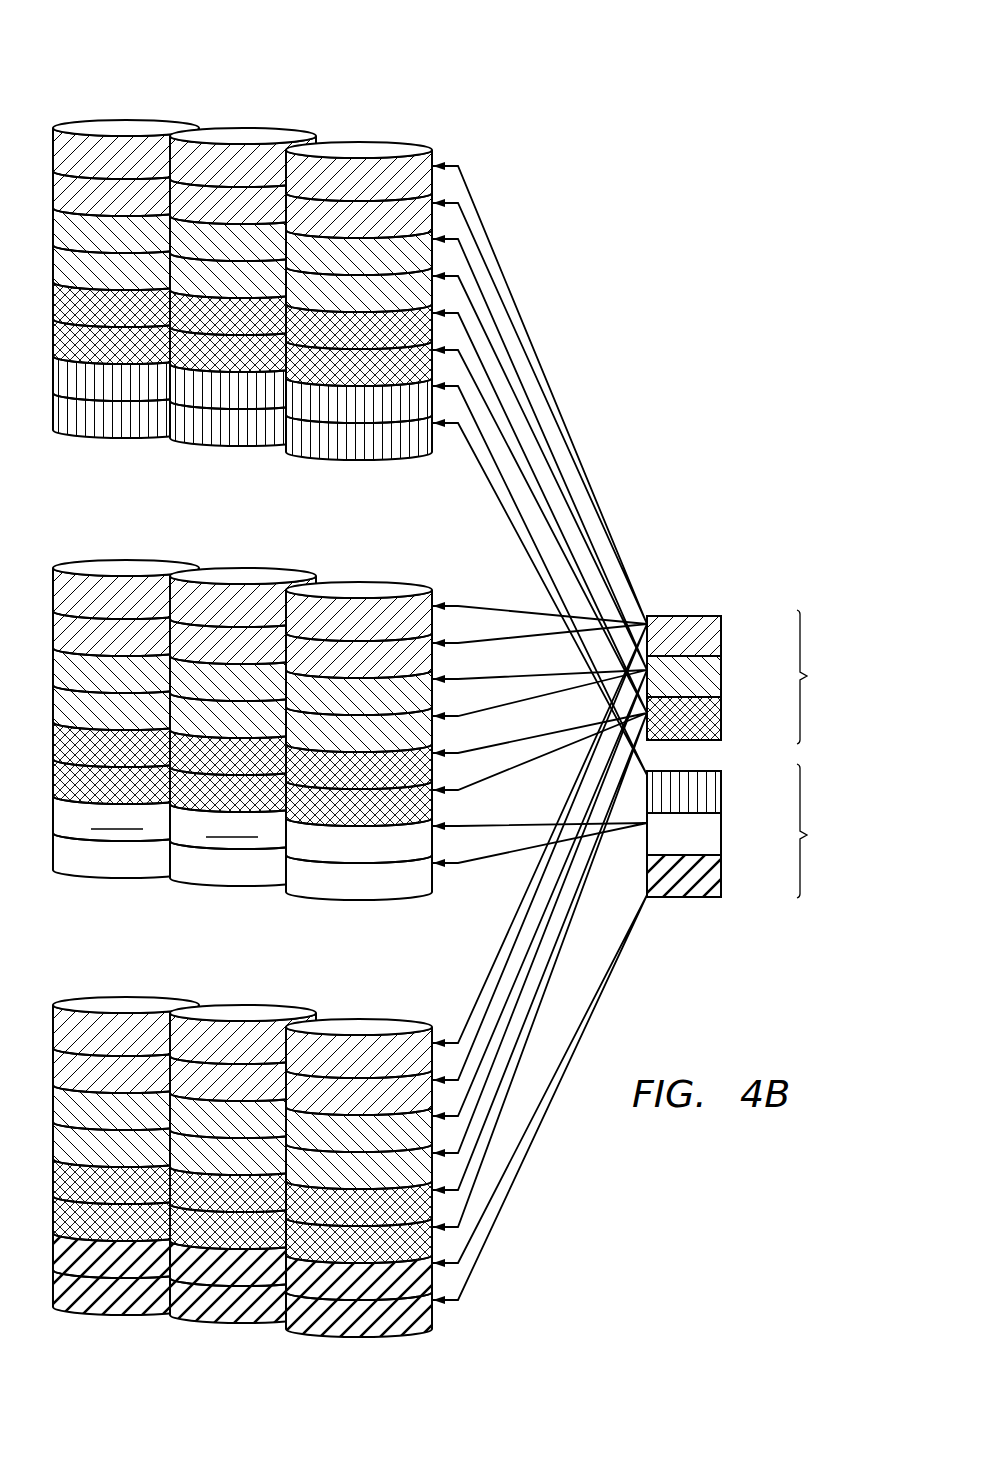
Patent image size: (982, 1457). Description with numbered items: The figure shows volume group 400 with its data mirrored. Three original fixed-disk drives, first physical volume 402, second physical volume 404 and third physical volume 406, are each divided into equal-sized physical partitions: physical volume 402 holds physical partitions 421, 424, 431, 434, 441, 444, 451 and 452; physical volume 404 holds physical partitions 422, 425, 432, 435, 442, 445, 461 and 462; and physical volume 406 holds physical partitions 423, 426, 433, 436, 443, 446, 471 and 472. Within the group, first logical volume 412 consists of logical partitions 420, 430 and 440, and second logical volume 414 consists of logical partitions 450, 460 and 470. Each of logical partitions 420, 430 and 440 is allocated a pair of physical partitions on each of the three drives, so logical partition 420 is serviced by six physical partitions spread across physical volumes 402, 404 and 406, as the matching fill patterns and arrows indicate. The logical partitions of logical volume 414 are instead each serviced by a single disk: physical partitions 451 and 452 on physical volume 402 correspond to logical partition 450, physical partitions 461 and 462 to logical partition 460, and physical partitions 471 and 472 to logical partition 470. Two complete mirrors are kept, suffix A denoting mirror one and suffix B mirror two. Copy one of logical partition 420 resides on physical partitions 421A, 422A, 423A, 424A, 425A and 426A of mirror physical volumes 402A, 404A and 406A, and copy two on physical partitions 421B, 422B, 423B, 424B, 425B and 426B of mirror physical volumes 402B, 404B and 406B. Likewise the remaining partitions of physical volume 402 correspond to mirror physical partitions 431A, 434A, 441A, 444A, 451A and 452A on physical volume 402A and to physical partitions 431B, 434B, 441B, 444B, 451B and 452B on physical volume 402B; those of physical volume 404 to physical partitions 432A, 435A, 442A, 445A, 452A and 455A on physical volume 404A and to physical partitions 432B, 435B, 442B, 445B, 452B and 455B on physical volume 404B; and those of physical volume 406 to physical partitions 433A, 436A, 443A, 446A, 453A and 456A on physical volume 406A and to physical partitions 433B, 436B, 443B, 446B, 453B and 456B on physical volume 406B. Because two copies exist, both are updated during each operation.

The volume group 400 is at (484, 671).
The first physical volume 402 is at (359, 244).
The first mirror physical volume 402A is at (243, 232).
The second mirror physical volume 402B is at (126, 221).
The second physical volume 404 is at (359, 684).
The first mirror physical volume 404A is at (243, 672).
The second mirror physical volume 404B is at (126, 661).
The third physical volume 406 is at (359, 1121).
The first mirror physical volume 406A is at (243, 1109).
The second mirror physical volume 406B is at (126, 1098).
The first logical volume 412 is at (704, 618).
The second logical volume 414 is at (704, 891).
The logical partition 420 is at (721, 634).
The logical partition 430 is at (721, 675).
The logical partition 440 is at (721, 715).
The logical partition 450 is at (721, 795).
The logical partition 460 is at (721, 837).
The logical partition 470 is at (721, 878).
The physical partition 421 is at (378, 195).
The physical partition 424 is at (378, 229).
The physical partition 431 is at (378, 265).
The physical partition 434 is at (378, 301).
The physical partition 441 is at (378, 338).
The physical partition 444 is at (378, 374).
The physical partition 451 is at (378, 411).
The physical partition 452 is at (378, 448).
The mirror physical partition 421A is at (258, 181).
The mirror physical partition 424A is at (258, 215).
The physical partition copy 431A is at (258, 251).
The physical partition copy 434A is at (258, 287).
The physical partition copy 441A is at (258, 324).
The physical partition copy 444A is at (258, 360).
The physical partition copy 451A is at (258, 397).
The physical partition copy 452A is at (258, 434).
The mirror physical partition 421B is at (143, 173).
The mirror physical partition 424B is at (143, 207).
The physical partition copy 431B is at (143, 243).
The physical partition copy 434B is at (143, 279).
The physical partition copy 441B is at (143, 316).
The physical partition copy 444B is at (143, 352).
The physical partition copy 451B is at (143, 389).
The physical partition copy 452B is at (143, 426).
The physical partition 422 is at (359, 615).
The physical partition 425 is at (359, 655).
The physical partition 432 is at (359, 692).
The physical partition 435 is at (359, 729).
The physical partition 442 is at (359, 766).
The physical partition 445 is at (359, 803).
The physical partition 461 is at (359, 840).
The physical partition 462 is at (359, 877).
The mirror physical partition 422A is at (243, 601).
The mirror physical partition 425A is at (243, 641).
The physical partition copy 432A is at (243, 678).
The physical partition copy 435A is at (243, 715).
The physical partition copy 442A is at (243, 752).
The physical partition copy 445A is at (243, 789).
The physical partition copy 455A is at (243, 863).
The mirror physical partition 422B is at (126, 593).
The mirror physical partition 425B is at (126, 633).
The physical partition copy 432B is at (126, 670).
The physical partition copy 435B is at (126, 707).
The physical partition copy 442B is at (126, 744).
The physical partition copy 445B is at (126, 781).
The physical partition copy 455B is at (126, 855).
The physical partition 423 is at (359, 1052).
The physical partition 426 is at (359, 1092).
The physical partition 433 is at (359, 1129).
The physical partition 436 is at (359, 1166).
The physical partition 443 is at (359, 1203).
The physical partition 446 is at (359, 1240).
The physical partition 471 is at (359, 1277).
The physical partition 472 is at (359, 1314).
The mirror physical partition 423A is at (243, 1038).
The mirror physical partition 426A is at (243, 1078).
The physical partition copy 433A is at (243, 1115).
The physical partition copy 436A is at (243, 1152).
The physical partition copy 443A is at (243, 1189).
The physical partition copy 446A is at (243, 1226).
The physical partition copy 453A is at (243, 1263).
The physical partition copy 456A is at (243, 1300).
The mirror physical partition 423B is at (126, 1030).
The mirror physical partition 426B is at (126, 1070).
The physical partition copy 433B is at (126, 1107).
The physical partition copy 436B is at (126, 1144).
The physical partition copy 443B is at (126, 1181).
The physical partition copy 446B is at (126, 1218).
The physical partition copy 453B is at (126, 1255).
The physical partition copy 456B is at (126, 1292).